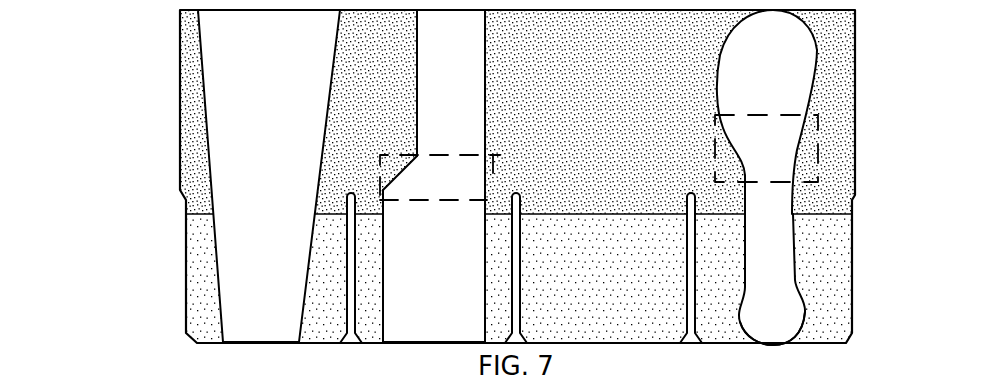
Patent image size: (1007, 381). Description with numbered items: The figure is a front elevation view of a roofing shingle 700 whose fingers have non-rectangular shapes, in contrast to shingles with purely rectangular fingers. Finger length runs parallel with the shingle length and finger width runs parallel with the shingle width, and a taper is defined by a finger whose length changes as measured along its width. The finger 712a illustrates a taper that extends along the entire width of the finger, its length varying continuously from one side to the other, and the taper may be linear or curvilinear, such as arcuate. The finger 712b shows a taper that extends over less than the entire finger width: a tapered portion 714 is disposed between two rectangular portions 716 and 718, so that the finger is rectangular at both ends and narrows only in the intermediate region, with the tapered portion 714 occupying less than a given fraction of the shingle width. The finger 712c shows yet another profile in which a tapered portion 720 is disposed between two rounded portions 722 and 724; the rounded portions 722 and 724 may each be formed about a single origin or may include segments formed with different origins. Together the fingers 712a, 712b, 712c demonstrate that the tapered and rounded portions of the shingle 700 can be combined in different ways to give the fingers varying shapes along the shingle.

The shingle 700 is at (135, 47).
The finger 712a is at (288, 282).
The finger 712b is at (462, 282).
The finger 712c is at (780, 248).
The tapered portion 714 is at (446, 155).
The rectangular portion 716 is at (467, 59).
The rectangular portion 718 is at (453, 310).
The tapered portion 720 is at (818, 143).
The rounded portion 722 is at (755, 57).
The rounded portion 724 is at (788, 317).